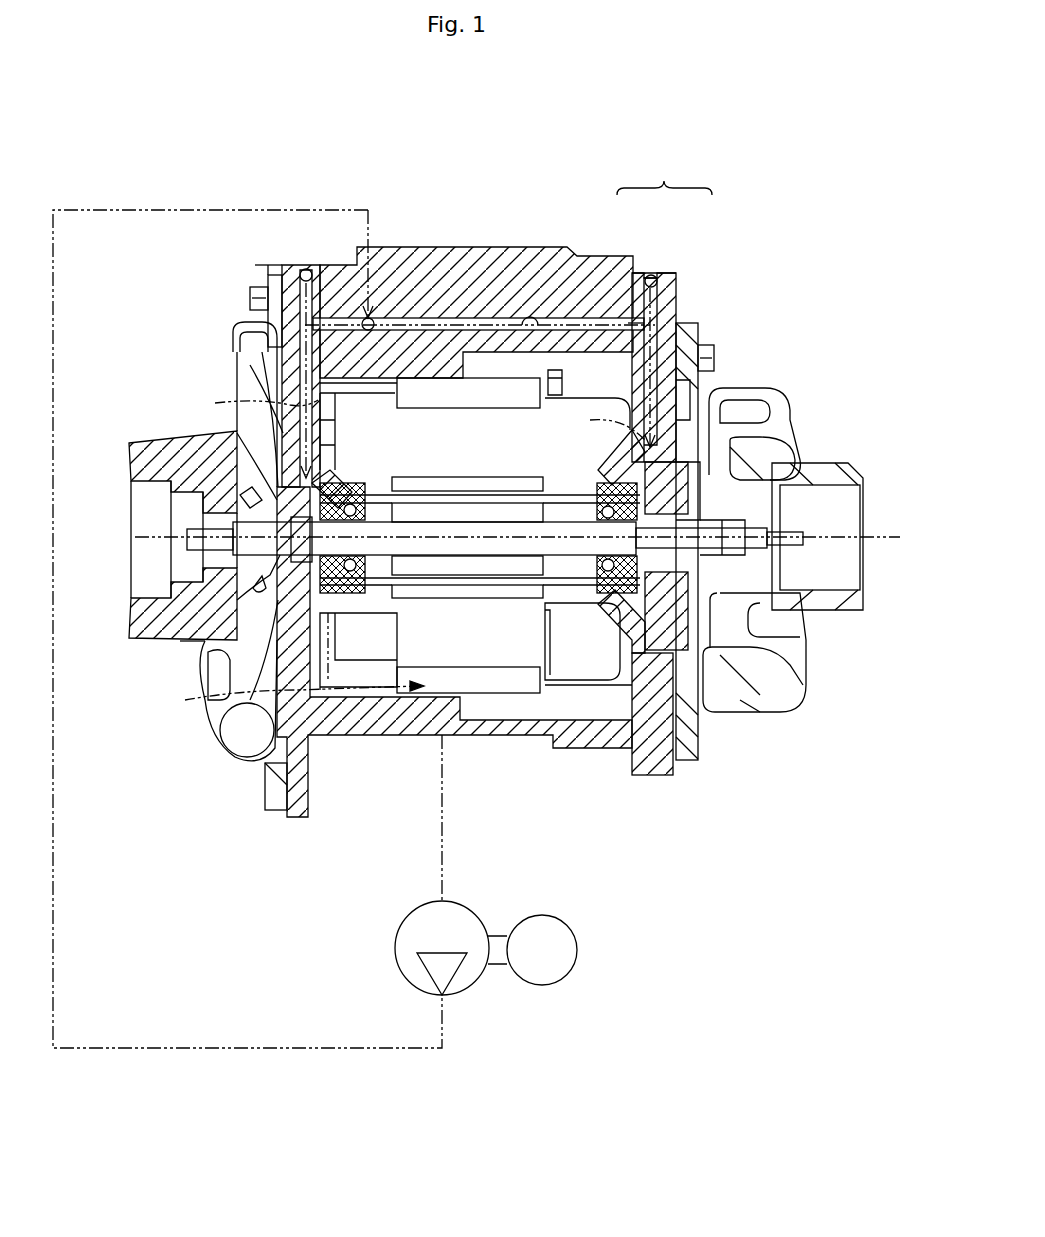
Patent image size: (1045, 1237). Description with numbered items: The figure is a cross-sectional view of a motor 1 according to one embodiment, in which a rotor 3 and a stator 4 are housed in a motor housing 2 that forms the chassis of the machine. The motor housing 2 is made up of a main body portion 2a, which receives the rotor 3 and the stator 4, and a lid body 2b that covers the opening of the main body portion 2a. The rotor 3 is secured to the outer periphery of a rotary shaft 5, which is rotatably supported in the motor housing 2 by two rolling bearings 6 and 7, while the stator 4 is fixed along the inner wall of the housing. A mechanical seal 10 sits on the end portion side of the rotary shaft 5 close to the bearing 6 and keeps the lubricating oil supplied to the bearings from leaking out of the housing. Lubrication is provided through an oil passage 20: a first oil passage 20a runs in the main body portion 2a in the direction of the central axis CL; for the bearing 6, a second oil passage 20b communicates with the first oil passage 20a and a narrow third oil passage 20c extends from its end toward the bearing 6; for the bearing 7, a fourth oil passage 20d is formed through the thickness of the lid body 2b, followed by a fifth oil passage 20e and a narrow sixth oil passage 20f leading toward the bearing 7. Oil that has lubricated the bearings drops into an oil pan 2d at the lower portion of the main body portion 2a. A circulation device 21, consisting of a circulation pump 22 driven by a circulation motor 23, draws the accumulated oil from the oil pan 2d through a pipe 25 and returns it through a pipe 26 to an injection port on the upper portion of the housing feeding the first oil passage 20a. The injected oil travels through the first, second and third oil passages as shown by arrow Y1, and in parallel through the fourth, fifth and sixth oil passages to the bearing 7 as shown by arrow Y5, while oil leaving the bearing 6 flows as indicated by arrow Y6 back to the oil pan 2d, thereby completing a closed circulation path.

The motor 1 is at (116, 266).
The motor housing 2 is at (664, 174).
The main body portion 2a is at (592, 257).
The lid body 2b is at (665, 273).
The oil pan 2d is at (422, 718).
The rotor 3 is at (520, 565).
The stator 4 is at (572, 660).
The rotary shaft 5 is at (455, 545).
The bearing 6 is at (350, 508).
The bearing 7 is at (605, 512).
The mechanical seal 10 is at (300, 522).
The oil passage 20 is at (418, 305).
The first oil passage 20a is at (465, 325).
The second oil passage 20b is at (302, 358).
The third oil passage 20c is at (290, 478).
The fourth oil passage 20d is at (640, 322).
The fifth oil passage 20e is at (660, 382).
The sixth oil passage 20f is at (690, 455).
The circulation device 21 is at (385, 940).
The circulation pump 22 is at (472, 985).
The circulation motor 23 is at (577, 955).
The pipe 25 is at (442, 865).
The pipe 26 is at (210, 1048).
The arrow Y1 is at (241, 404).
The arrow Y5 is at (600, 422).
The arrow Y6 is at (286, 663).
The central axis CL is at (875, 537).